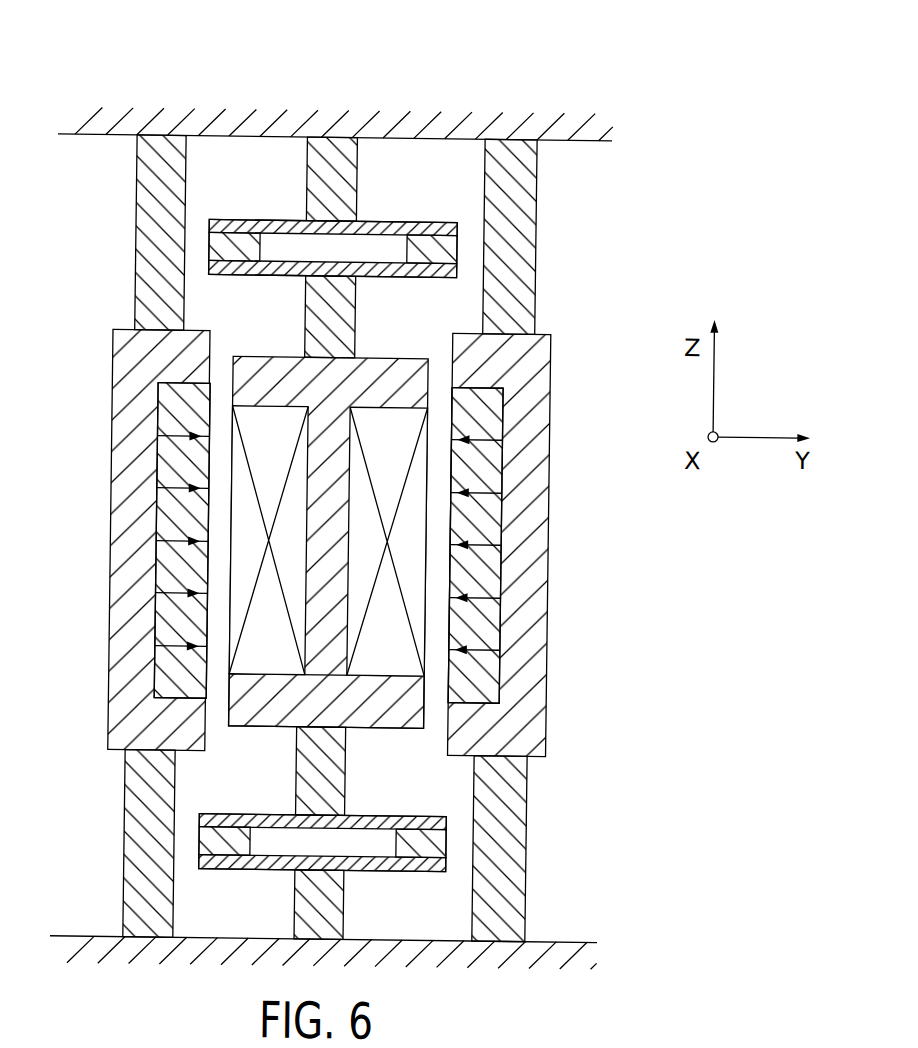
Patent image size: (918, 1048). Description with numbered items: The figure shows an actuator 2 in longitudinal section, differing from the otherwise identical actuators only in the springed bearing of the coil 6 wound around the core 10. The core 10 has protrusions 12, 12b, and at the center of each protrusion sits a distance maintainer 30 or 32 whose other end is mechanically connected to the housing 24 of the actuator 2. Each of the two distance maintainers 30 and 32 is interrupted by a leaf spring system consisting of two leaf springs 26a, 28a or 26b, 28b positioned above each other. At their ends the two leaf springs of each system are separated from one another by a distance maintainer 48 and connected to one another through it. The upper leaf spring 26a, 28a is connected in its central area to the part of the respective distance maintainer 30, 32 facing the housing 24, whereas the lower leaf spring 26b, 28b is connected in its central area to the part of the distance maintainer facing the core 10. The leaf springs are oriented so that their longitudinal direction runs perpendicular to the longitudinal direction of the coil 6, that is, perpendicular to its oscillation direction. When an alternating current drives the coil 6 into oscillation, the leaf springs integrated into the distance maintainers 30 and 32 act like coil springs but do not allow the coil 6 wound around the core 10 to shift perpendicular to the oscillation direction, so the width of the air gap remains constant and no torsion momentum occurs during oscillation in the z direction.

The actuator 2 is at (591, 69).
The coil 6 is at (336, 541).
The core 10 is at (332, 598).
The protrusion 12 is at (328, 541).
The protrusion 12b is at (265, 721).
The housing 24 is at (233, 944).
The upper leaf spring 26a is at (399, 218).
The lower leaf spring 26b is at (395, 814).
The upper leaf spring 28a is at (440, 277).
The lower leaf spring 28b is at (434, 872).
The distance maintainer 30 is at (332, 338).
The distance maintainer 32 is at (338, 765).
The distance maintainer 48 is at (244, 241).